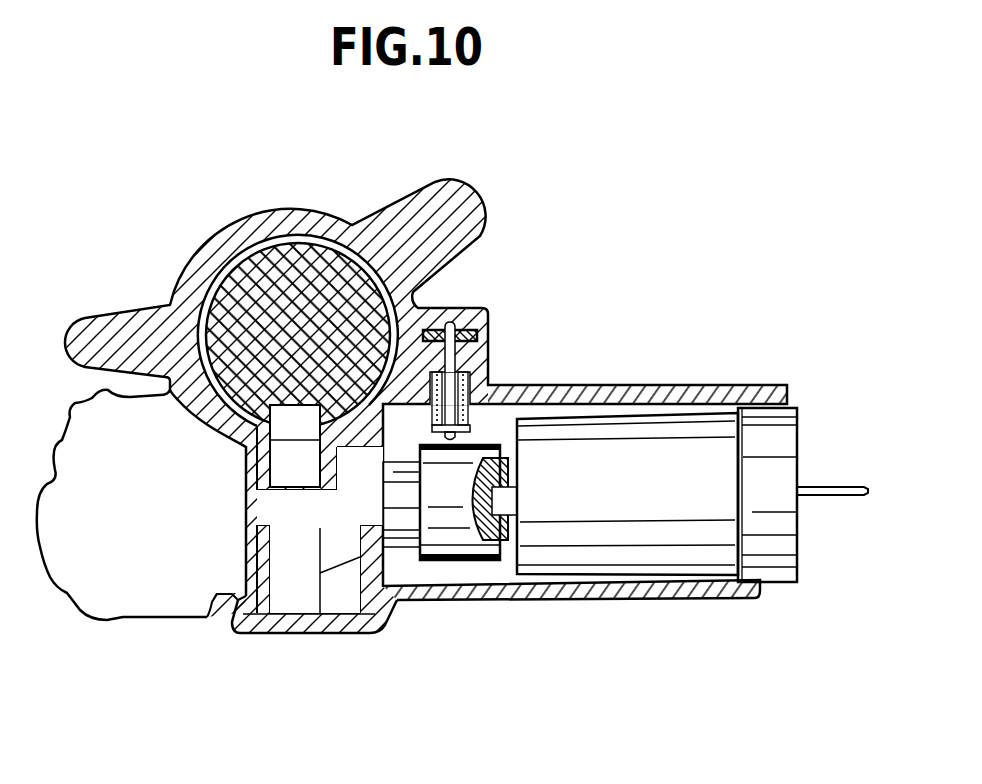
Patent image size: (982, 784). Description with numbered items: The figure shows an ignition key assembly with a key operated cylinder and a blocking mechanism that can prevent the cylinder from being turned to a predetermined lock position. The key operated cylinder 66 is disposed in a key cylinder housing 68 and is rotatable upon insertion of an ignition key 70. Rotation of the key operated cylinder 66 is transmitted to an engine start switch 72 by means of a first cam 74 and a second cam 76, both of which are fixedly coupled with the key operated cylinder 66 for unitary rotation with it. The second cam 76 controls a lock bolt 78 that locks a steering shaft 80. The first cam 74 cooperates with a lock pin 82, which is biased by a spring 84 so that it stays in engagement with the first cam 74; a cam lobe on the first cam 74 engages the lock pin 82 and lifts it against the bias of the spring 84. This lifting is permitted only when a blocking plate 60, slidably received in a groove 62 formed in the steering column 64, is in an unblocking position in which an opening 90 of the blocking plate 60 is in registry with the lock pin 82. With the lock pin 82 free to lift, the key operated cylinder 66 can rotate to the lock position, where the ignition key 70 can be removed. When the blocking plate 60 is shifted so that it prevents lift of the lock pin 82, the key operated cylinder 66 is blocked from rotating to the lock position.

The blocking plate 60 is at (478, 337).
The groove 62 is at (430, 333).
The steering column 64 is at (212, 248).
The key operated cylinder 66 is at (682, 509).
The key cylinder housing 68 is at (644, 588).
The ignition key 70 is at (825, 486).
The engine start switch 72 is at (171, 604).
The first cam 74 is at (458, 545).
The second cam 76 is at (297, 503).
The lock bolt 78 is at (293, 452).
The steering shaft 80 is at (293, 262).
The lock pin 82 is at (453, 360).
The spring 84 is at (467, 380).
The opening 90 is at (457, 322).